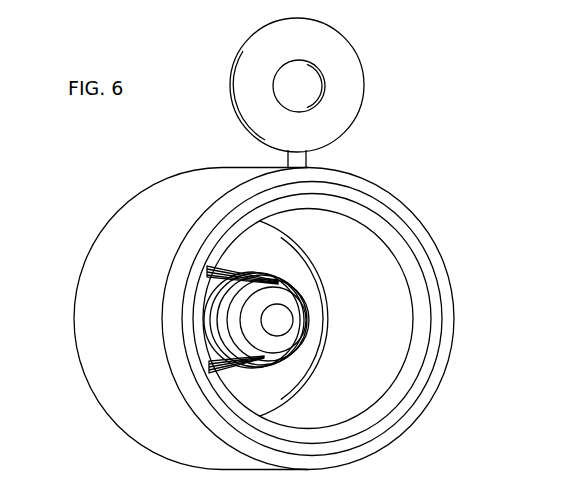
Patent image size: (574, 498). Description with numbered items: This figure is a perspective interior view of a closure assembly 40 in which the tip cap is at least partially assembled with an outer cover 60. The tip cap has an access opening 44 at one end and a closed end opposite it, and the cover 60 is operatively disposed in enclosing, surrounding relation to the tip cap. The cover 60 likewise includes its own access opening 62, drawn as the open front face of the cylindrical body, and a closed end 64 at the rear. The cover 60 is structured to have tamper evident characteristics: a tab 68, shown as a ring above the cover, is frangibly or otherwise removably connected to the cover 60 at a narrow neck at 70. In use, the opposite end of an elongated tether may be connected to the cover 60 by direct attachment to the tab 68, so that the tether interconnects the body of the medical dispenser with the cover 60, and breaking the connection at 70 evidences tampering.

The closure assembly 40 is at (475, 308).
The access opening 44 is at (420, 357).
The outer cover 60 is at (118, 279).
The access opening 62 is at (447, 265).
The closed end 64 is at (80, 355).
The tab 68 is at (353, 48).
The frangible connection 70 is at (308, 157).